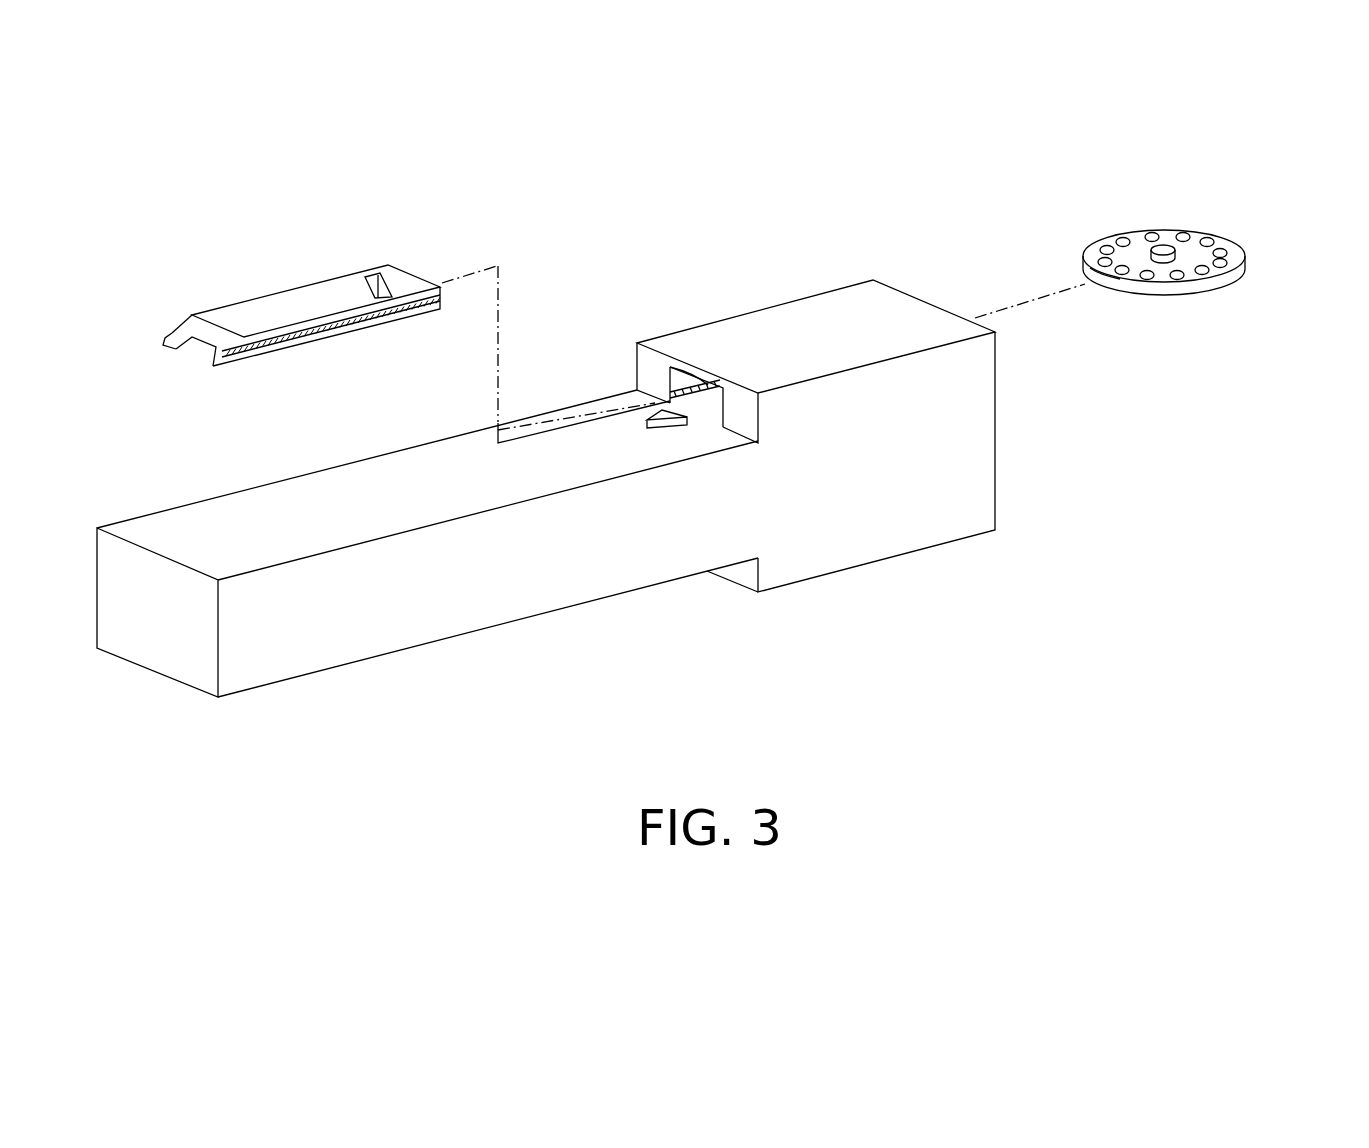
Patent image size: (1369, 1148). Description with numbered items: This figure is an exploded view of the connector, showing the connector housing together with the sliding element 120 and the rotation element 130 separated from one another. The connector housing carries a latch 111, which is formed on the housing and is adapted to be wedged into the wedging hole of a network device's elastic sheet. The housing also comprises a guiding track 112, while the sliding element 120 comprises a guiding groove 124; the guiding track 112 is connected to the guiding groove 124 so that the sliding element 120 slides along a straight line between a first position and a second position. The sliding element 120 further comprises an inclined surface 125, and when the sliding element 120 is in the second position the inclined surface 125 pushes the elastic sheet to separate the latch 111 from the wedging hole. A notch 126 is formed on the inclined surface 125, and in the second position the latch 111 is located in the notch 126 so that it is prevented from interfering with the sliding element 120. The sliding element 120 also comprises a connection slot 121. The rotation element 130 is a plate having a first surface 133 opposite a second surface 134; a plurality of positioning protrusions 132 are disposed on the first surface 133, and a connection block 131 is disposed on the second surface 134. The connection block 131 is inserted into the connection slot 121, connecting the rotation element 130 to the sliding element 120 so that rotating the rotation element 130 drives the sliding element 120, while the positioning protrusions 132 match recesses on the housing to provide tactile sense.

The latch 111 is at (668, 422).
The guiding track 112 is at (668, 370).
The sliding element 120 is at (298, 298).
The connection slot 121 is at (376, 277).
The guiding groove 124 is at (287, 343).
The inclined surface 125 is at (213, 333).
The notch 126 is at (198, 355).
The rotation element 130 is at (1195, 240).
The connection block 131 is at (1110, 284).
The positioning protrusions 132 is at (1152, 235).
The first surface 133 is at (1236, 256).
The second surface 134 is at (1195, 292).